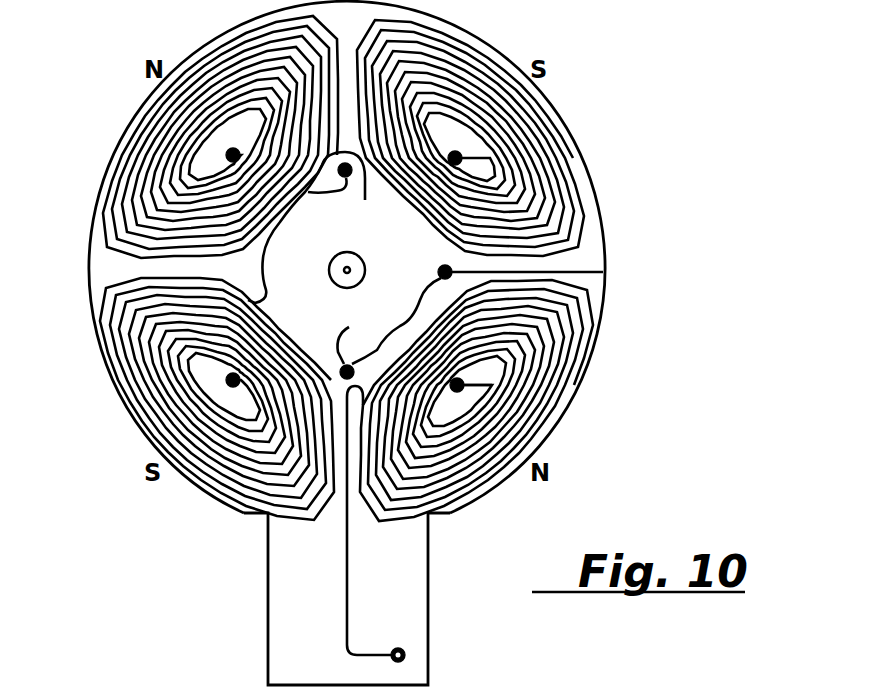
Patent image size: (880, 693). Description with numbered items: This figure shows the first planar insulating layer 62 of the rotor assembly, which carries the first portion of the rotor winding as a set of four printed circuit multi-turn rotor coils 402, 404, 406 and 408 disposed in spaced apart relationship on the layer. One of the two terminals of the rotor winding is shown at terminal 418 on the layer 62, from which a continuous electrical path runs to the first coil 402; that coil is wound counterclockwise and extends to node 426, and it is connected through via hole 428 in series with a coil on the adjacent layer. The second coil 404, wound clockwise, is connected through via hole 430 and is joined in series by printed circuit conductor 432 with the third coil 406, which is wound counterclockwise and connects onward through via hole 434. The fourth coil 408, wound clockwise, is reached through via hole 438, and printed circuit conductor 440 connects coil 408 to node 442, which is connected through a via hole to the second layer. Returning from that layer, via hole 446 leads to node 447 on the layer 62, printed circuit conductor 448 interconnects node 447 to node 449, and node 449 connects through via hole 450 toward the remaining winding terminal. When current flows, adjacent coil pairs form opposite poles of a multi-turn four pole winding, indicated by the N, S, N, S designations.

The first planar insulating layer 62 is at (573, 140).
The first coil 402 is at (587, 375).
The second coil 404 is at (583, 186).
The third coil 406 is at (108, 166).
The fourth coil 408 is at (133, 413).
The terminal 418 is at (398, 655).
The node 426 is at (457, 385).
The via hole 428 is at (457, 385).
The via hole 430 is at (455, 158).
The printed circuit conductor 432 is at (366, 178).
The via hole 434 is at (233, 155).
The via hole 438 is at (233, 392).
The printed circuit conductor 440 is at (262, 264).
The node 442 is at (338, 196).
The via hole 446 is at (603, 272).
The node 447 is at (440, 265).
The printed circuit conductor 448 is at (407, 320).
The node 449 is at (340, 368).
The via hole 450 is at (362, 335).